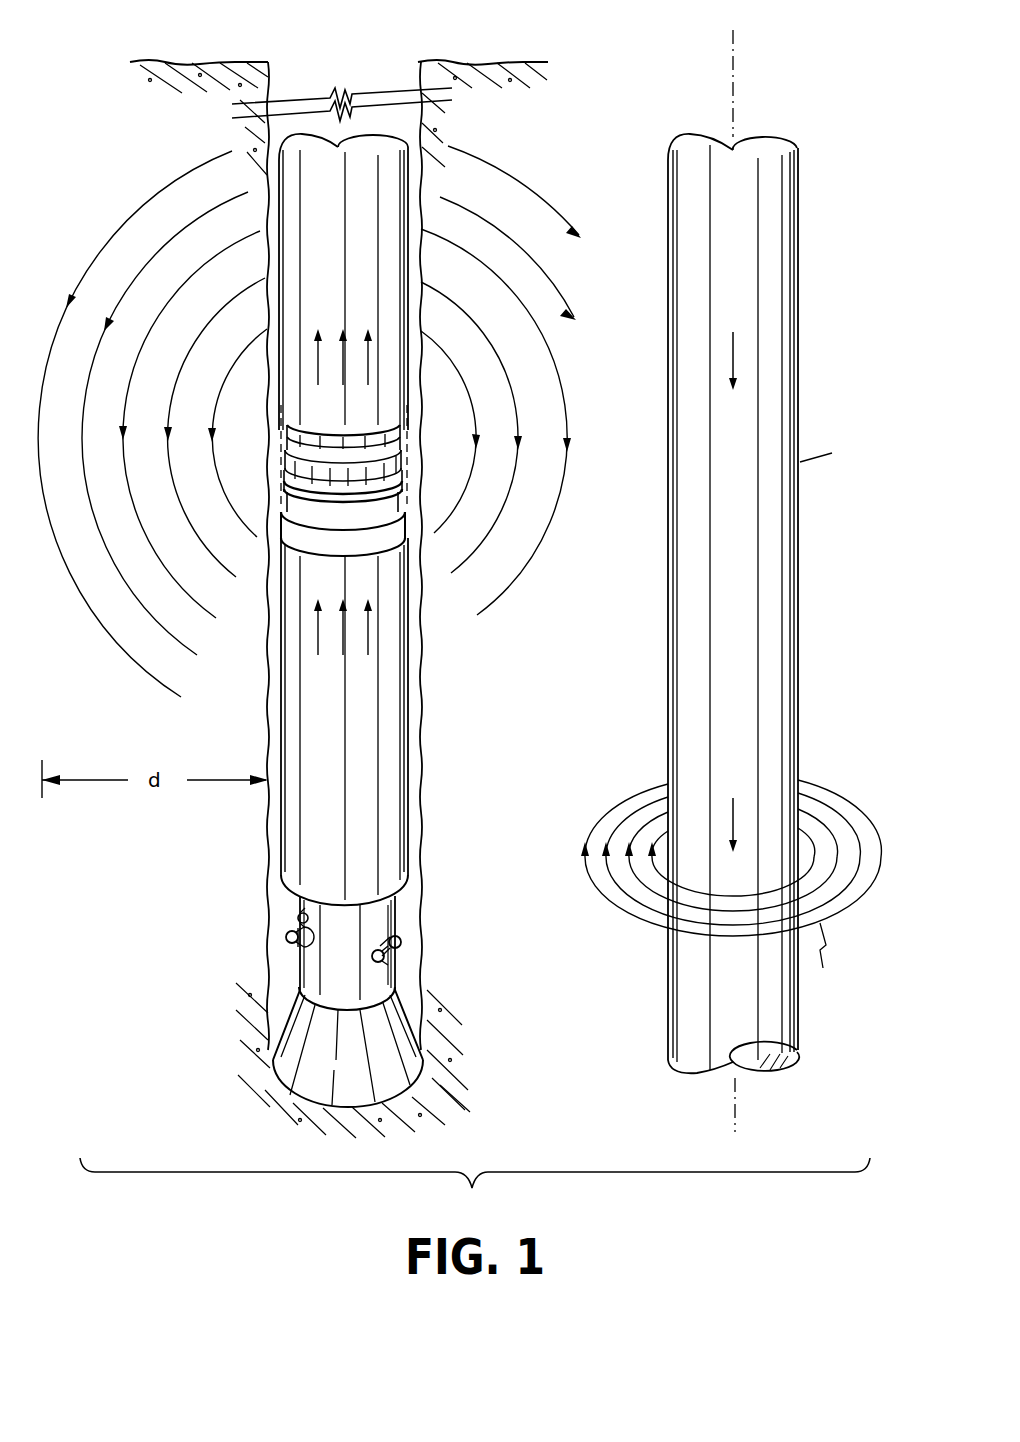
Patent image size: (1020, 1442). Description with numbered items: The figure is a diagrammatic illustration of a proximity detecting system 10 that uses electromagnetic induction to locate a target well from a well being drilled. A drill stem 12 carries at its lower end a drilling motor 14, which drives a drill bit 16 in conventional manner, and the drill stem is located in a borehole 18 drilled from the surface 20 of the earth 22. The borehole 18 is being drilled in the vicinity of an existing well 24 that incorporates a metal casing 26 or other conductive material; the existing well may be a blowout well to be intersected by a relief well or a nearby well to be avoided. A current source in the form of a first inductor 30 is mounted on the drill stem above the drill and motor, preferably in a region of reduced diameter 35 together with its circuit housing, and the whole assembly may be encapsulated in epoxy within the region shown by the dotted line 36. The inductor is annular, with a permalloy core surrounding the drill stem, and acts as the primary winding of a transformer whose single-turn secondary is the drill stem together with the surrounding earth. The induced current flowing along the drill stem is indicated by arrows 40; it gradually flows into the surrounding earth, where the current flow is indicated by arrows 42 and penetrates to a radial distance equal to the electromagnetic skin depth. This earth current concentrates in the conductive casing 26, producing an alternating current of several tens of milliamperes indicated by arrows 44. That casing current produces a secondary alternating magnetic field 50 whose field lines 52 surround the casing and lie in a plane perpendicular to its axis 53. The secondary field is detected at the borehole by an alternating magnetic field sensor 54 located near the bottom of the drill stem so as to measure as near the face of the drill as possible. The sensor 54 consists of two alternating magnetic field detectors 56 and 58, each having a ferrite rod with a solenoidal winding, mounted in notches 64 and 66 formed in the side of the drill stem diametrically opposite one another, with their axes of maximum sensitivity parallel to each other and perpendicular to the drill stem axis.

The proximity detecting system 10 is at (198, 929).
The drill stem 12 is at (397, 190).
The drilling motor 14 is at (297, 695).
The drill bit 16 is at (400, 1080).
The borehole 18 is at (422, 908).
The surface 20 is at (451, 63).
The earth 22 is at (566, 1046).
The existing well 24 is at (805, 657).
The metal casing 26 is at (782, 590).
The first inductor 30 is at (404, 459).
The region of reduced diameter 35 is at (336, 434).
The epoxy encapsulation region 36 is at (405, 483).
The induced current flow arrows 40 is at (375, 362).
The earth current flow arrows 42 is at (523, 186).
The casing current arrows 44 is at (733, 360).
The secondary magnetic field 50 is at (850, 798).
The field lines 52 is at (820, 887).
The axis 53 is at (736, 1118).
The alternating magnetic field sensor 54 is at (287, 948).
The alternating magnetic field detector 56 is at (288, 930).
The alternating magnetic field detector 58 is at (405, 948).
The notch 64 is at (298, 912).
The notch 66 is at (395, 960).